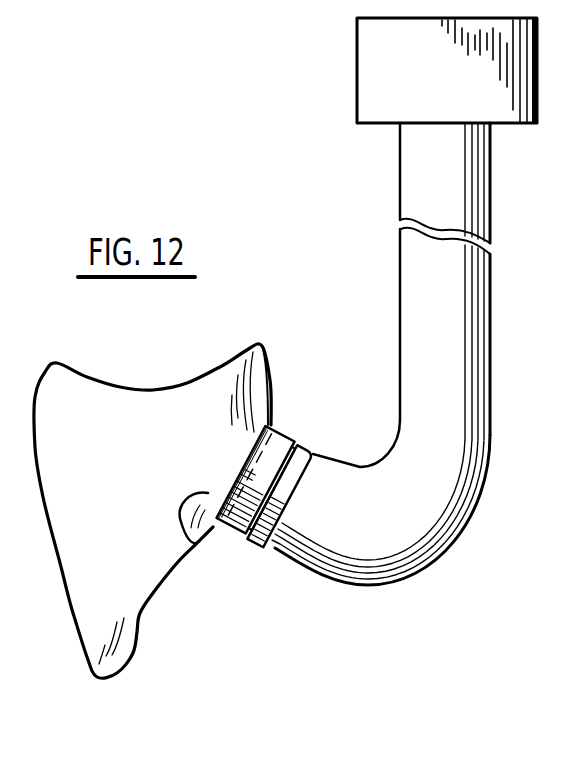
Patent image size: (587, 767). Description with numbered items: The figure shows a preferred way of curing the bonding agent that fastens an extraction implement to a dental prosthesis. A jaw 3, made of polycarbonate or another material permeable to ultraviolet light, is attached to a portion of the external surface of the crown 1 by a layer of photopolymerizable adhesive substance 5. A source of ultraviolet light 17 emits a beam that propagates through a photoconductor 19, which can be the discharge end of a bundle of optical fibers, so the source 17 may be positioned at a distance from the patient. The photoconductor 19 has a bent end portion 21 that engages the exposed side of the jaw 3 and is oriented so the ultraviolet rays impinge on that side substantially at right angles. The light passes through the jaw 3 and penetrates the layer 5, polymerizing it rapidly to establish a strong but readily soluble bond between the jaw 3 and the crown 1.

The crown 1 is at (133, 517).
The jaw 3 is at (233, 533).
The adhesive substance 5 is at (188, 543).
The source of ultraviolet light 17 is at (370, 102).
The photoconductor 19 is at (415, 266).
The bent end portion 21 is at (393, 540).